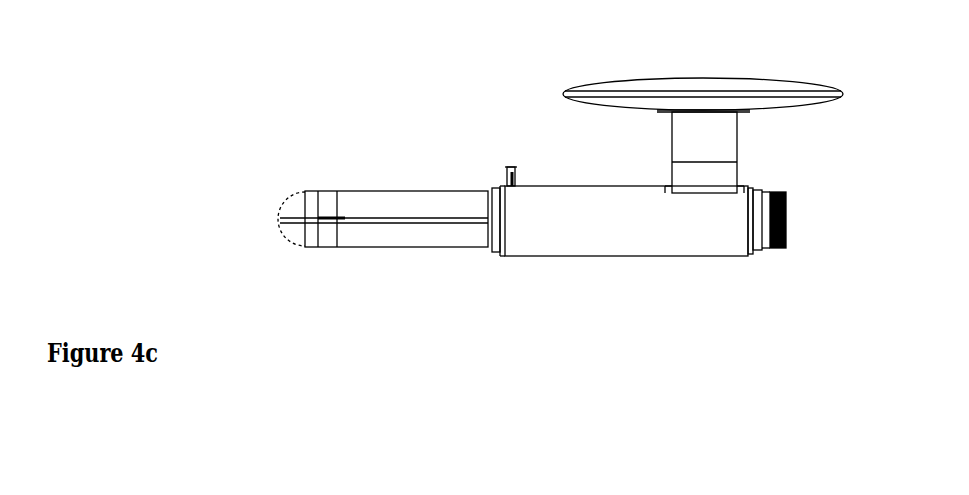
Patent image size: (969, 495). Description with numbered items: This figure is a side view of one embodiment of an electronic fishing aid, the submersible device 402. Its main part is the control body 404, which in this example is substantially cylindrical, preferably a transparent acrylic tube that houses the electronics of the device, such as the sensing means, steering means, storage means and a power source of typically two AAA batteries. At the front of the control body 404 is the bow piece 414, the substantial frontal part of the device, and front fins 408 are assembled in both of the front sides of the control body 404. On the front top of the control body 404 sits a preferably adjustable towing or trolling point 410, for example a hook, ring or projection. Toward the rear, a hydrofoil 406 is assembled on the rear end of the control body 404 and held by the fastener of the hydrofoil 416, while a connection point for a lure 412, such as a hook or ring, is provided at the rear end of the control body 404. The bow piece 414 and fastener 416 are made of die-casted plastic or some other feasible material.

The submersible device 402 is at (399, 73).
The control body 404 is at (525, 257).
The hydrofoil 406 is at (577, 91).
The front fins 408 is at (318, 215).
The towing/trolling point 410 is at (512, 165).
The connection point for a lure 412 is at (786, 220).
The bow piece 414 is at (278, 219).
The fastener of the hydrofoil 416 is at (737, 124).